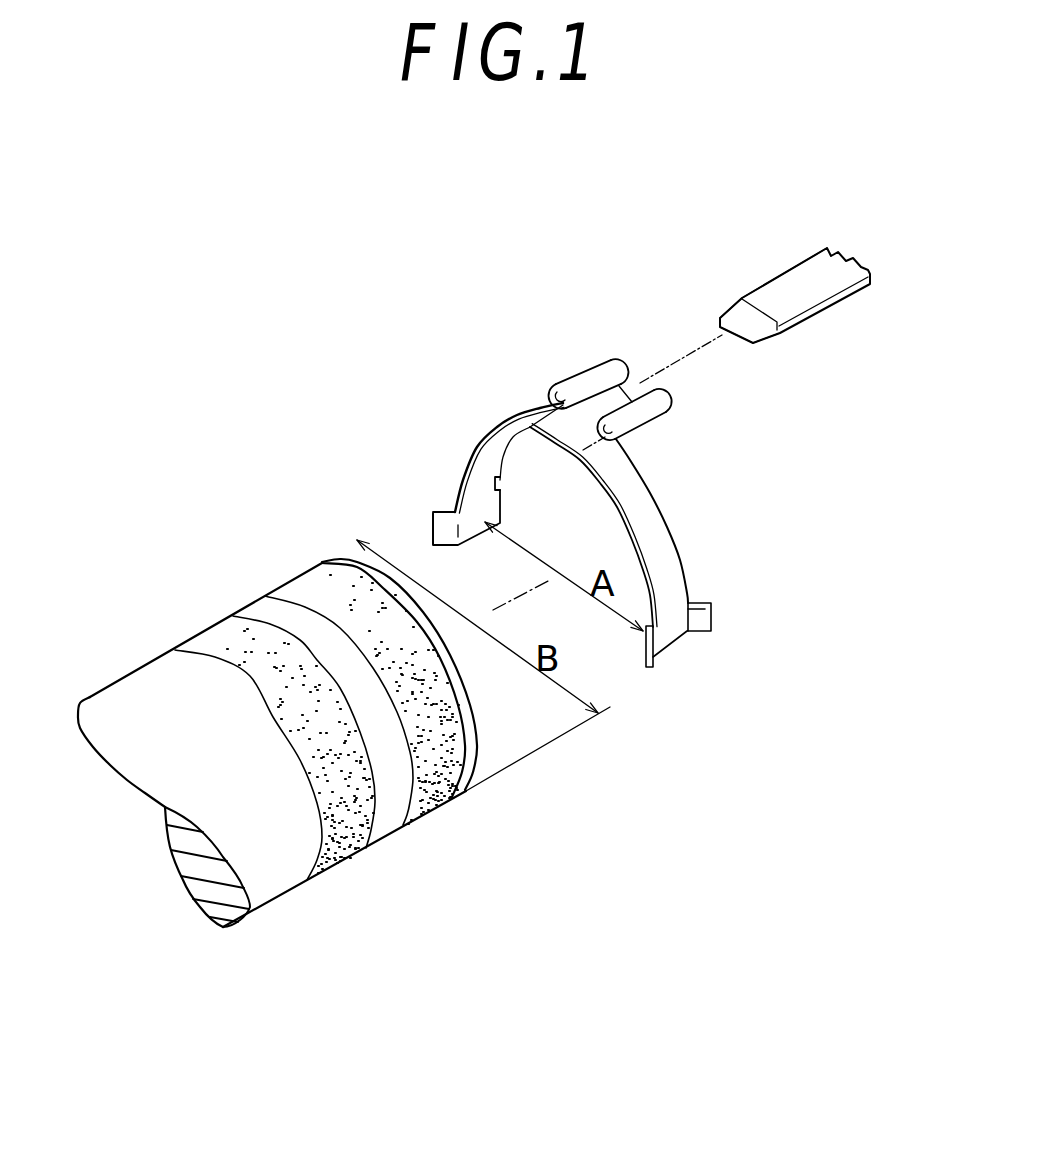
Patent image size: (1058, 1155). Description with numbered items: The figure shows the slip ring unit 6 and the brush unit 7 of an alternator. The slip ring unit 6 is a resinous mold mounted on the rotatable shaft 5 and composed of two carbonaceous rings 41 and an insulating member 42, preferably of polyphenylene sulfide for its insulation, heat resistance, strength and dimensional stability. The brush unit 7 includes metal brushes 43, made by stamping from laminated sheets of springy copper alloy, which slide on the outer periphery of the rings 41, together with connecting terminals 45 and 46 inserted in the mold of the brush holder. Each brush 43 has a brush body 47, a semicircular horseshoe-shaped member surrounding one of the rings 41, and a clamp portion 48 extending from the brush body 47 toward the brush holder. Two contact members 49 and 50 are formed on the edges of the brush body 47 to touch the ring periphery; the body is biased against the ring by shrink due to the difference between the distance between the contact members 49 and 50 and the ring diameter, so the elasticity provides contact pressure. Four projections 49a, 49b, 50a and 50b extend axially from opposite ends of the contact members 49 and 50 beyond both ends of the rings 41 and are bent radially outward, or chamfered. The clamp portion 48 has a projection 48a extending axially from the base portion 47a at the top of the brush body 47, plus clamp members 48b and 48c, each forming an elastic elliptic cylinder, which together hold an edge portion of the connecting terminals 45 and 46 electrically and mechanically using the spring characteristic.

The shaft 5 is at (200, 867).
The slip ring unit 6 is at (272, 590).
The brush unit 7 is at (756, 270).
The carbonaceous rings 41 is at (353, 833).
The insulating member 42 is at (290, 863).
The metal brushes 43 is at (512, 412).
The connecting terminal 45 is at (815, 290).
The connecting terminal 46 is at (825, 355).
The brush body 47 is at (648, 508).
The base portion 47a is at (547, 421).
The clamp portion 48 is at (628, 380).
The projection 48a is at (617, 400).
The clamp member 48b is at (594, 374).
The clamp member 48c is at (665, 396).
The contact member 49 is at (463, 533).
The projection 49a is at (430, 527).
The projection 49b is at (502, 480).
The contact member 50 is at (677, 632).
The projection 50a is at (650, 660).
The projection 50b is at (703, 617).